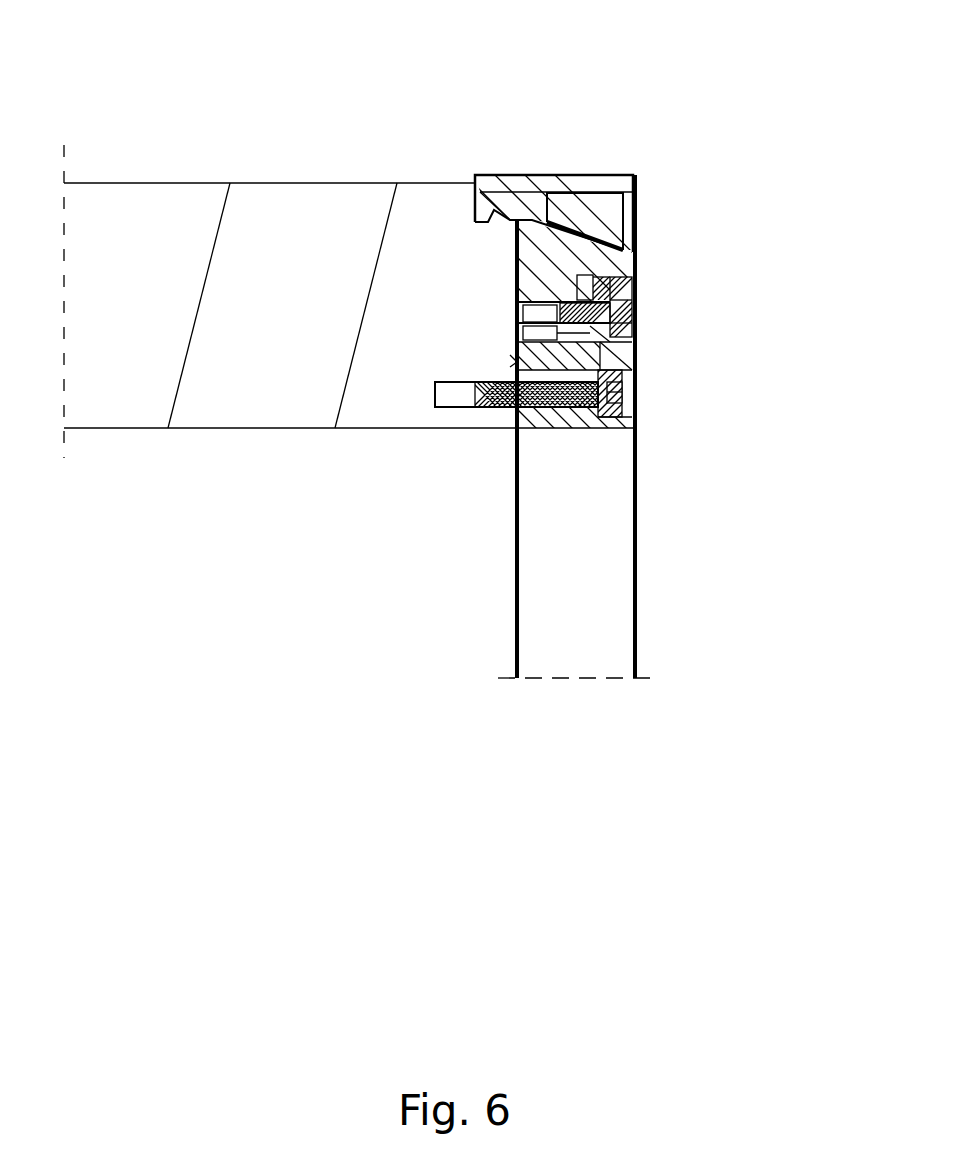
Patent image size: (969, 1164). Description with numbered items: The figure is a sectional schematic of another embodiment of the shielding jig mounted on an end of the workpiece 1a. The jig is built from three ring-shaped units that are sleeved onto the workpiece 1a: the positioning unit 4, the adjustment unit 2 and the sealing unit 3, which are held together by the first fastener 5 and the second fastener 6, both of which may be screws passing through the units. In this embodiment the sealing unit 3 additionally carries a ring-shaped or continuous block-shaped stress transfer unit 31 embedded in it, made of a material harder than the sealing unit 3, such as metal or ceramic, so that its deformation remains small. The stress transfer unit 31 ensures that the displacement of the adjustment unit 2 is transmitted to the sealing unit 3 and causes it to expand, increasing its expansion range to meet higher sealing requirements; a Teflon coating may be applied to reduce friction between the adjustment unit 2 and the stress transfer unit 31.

The workpiece 1a is at (272, 245).
The adjustment unit 2 is at (623, 260).
The sealing unit 3 is at (553, 190).
The stress transfer unit 31 is at (593, 218).
The positioning unit 4 is at (637, 355).
The first fastener 5 is at (637, 297).
The second fastener 6 is at (637, 415).